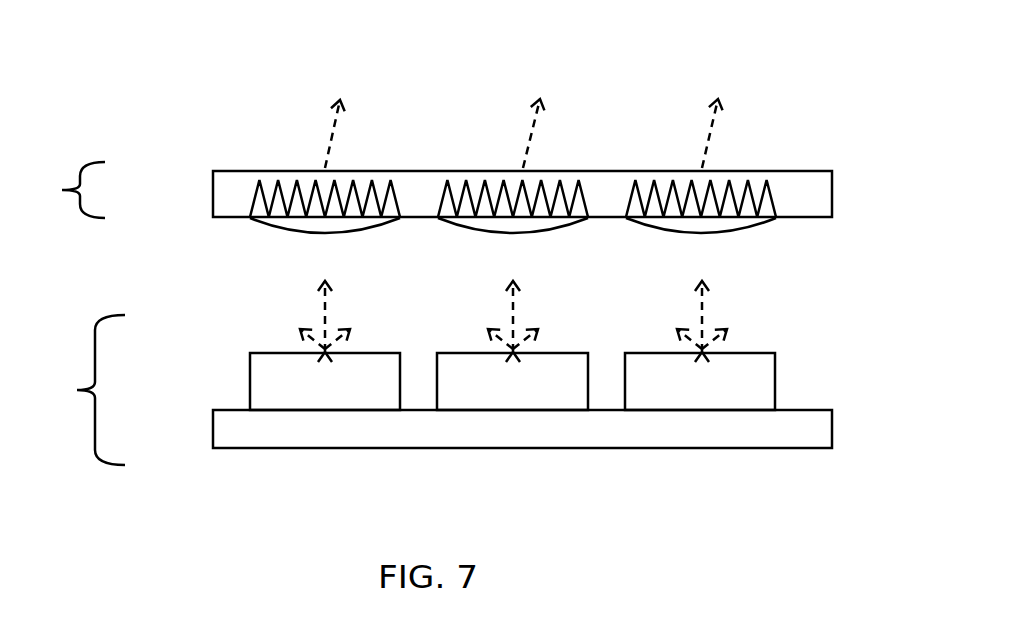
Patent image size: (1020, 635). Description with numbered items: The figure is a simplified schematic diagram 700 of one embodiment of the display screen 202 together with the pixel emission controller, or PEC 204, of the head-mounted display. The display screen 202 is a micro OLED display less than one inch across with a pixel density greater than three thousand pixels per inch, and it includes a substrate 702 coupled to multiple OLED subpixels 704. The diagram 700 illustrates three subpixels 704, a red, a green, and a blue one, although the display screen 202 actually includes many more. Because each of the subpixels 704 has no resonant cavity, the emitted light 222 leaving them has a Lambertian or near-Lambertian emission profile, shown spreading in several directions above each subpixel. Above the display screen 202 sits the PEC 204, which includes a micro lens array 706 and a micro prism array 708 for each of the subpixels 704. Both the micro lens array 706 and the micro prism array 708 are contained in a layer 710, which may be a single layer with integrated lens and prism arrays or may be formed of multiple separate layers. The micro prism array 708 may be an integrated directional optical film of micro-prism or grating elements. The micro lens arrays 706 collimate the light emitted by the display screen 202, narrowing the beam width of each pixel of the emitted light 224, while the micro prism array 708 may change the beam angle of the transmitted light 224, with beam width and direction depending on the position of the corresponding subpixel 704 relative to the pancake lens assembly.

The diagram 700 is at (872, 118).
The pixel emission controller (PEC) 204 is at (56, 190).
The display screen 202 is at (80, 390).
The emitted (transmitted) light 224 is at (243, 129).
The emitted light 222 is at (243, 301).
The layer 710 is at (813, 190).
The micro prism array 708 is at (266, 208).
The micro lens array 706 is at (377, 223).
The OLED subpixels 704 is at (512, 381).
The substrate 702 is at (522, 429).